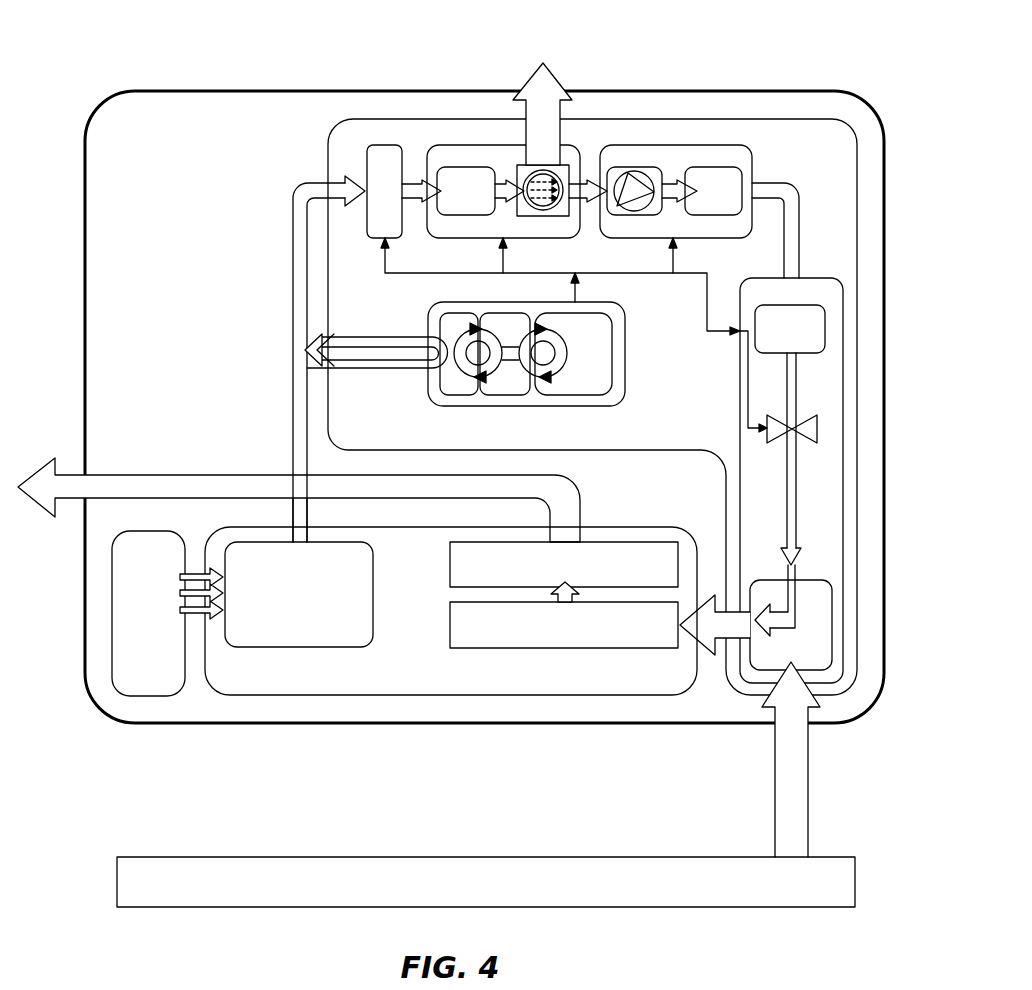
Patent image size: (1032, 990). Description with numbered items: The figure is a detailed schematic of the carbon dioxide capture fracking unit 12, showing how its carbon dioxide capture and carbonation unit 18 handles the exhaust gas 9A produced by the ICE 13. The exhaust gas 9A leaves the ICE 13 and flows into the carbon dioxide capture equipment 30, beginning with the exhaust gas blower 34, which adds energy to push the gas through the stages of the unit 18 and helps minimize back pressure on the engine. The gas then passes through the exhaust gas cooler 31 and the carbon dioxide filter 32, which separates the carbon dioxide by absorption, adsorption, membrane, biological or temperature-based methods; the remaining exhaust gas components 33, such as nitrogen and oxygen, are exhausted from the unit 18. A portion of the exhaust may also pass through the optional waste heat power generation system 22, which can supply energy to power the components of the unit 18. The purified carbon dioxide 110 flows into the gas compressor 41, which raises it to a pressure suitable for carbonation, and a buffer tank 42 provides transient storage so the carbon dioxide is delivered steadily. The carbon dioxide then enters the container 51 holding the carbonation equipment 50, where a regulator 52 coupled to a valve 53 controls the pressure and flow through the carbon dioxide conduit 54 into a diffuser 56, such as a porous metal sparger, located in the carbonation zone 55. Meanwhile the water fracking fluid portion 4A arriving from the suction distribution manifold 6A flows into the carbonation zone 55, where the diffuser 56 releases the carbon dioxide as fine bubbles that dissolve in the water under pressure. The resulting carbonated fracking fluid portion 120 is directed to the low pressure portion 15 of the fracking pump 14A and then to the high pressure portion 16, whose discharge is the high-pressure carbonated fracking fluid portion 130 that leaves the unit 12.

The carbon dioxide capture fracking unit 12 is at (196, 91).
The carbon dioxide capture and carbonation unit 18 is at (783, 117).
The exhaust gas 9A is at (293, 412).
The exhaust gas blower 34 is at (385, 145).
The carbon dioxide capture equipment 30 is at (622, 48).
The exhaust gas cooler 31 is at (465, 167).
The carbon dioxide filter 32 is at (523, 165).
The remaining exhaust gas components 33 is at (560, 86).
The purified carbon dioxide 110 is at (585, 180).
The gas compressor 41 is at (634, 172).
The buffer tank 42 is at (715, 167).
The waste heat power generation system 22 is at (628, 352).
The carbonation equipment 50 is at (836, 438).
The container 51 is at (843, 300).
The regulator 52 is at (825, 327).
The valve 53 is at (818, 414).
The carbon dioxide conduit 54 is at (797, 466).
The carbonation zone 55 is at (832, 572).
The diffuser 56 is at (800, 590).
The carbonated fracking fluid portion 120 is at (703, 632).
The water fracking fluid portion 4A is at (808, 782).
The suction distribution manifold 6A is at (117, 882).
The high-pressure carbonated fracking fluid portion 130 is at (73, 475).
The fracking pump 14A is at (451, 597).
The high pressure portion 16 is at (625, 542).
The low pressure portion 15 is at (625, 648).
The ICE 13 is at (297, 648).